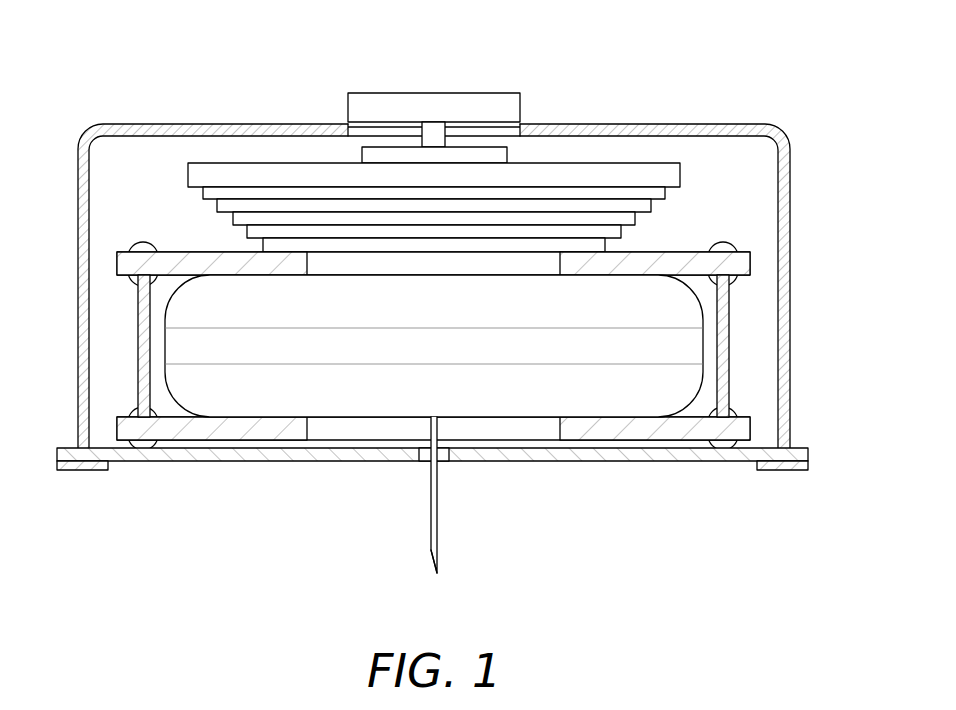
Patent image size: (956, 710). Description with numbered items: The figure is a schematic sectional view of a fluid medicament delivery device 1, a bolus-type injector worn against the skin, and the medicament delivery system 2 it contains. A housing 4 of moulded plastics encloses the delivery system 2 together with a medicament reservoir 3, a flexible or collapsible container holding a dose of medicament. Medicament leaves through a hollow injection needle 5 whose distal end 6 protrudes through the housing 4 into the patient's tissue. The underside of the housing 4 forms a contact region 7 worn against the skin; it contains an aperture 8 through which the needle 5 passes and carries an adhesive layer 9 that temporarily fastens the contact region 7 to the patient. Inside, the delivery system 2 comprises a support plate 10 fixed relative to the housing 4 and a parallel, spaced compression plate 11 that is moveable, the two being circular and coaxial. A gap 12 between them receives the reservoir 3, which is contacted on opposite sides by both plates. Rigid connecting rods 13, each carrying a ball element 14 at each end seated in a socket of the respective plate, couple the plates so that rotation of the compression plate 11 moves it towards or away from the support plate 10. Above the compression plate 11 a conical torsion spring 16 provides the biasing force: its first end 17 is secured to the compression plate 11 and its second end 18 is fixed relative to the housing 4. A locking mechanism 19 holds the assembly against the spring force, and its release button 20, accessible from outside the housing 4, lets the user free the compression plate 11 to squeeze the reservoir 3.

The fluid medicament delivery device 1 is at (697, 60).
The medicament delivery system 2 is at (755, 242).
The medicament reservoir 3 is at (176, 318).
The housing 4 is at (753, 125).
The hollow injection needle 5 is at (437, 510).
The distal end 6 is at (437, 573).
The contact region 7 is at (265, 462).
The aperture 8 is at (423, 462).
The adhesive layer 9 is at (77, 472).
The support plate 10 is at (750, 428).
The compression plate 11 is at (750, 262).
The gap 12 is at (703, 320).
The connecting rods 13 is at (138, 370).
The ball elements 14 is at (143, 242).
The conical torsion spring 16 is at (608, 175).
The first end 17 is at (433, 245).
The second end 18 is at (237, 163).
The locking mechanism 19 is at (385, 147).
The release button 20 is at (497, 93).